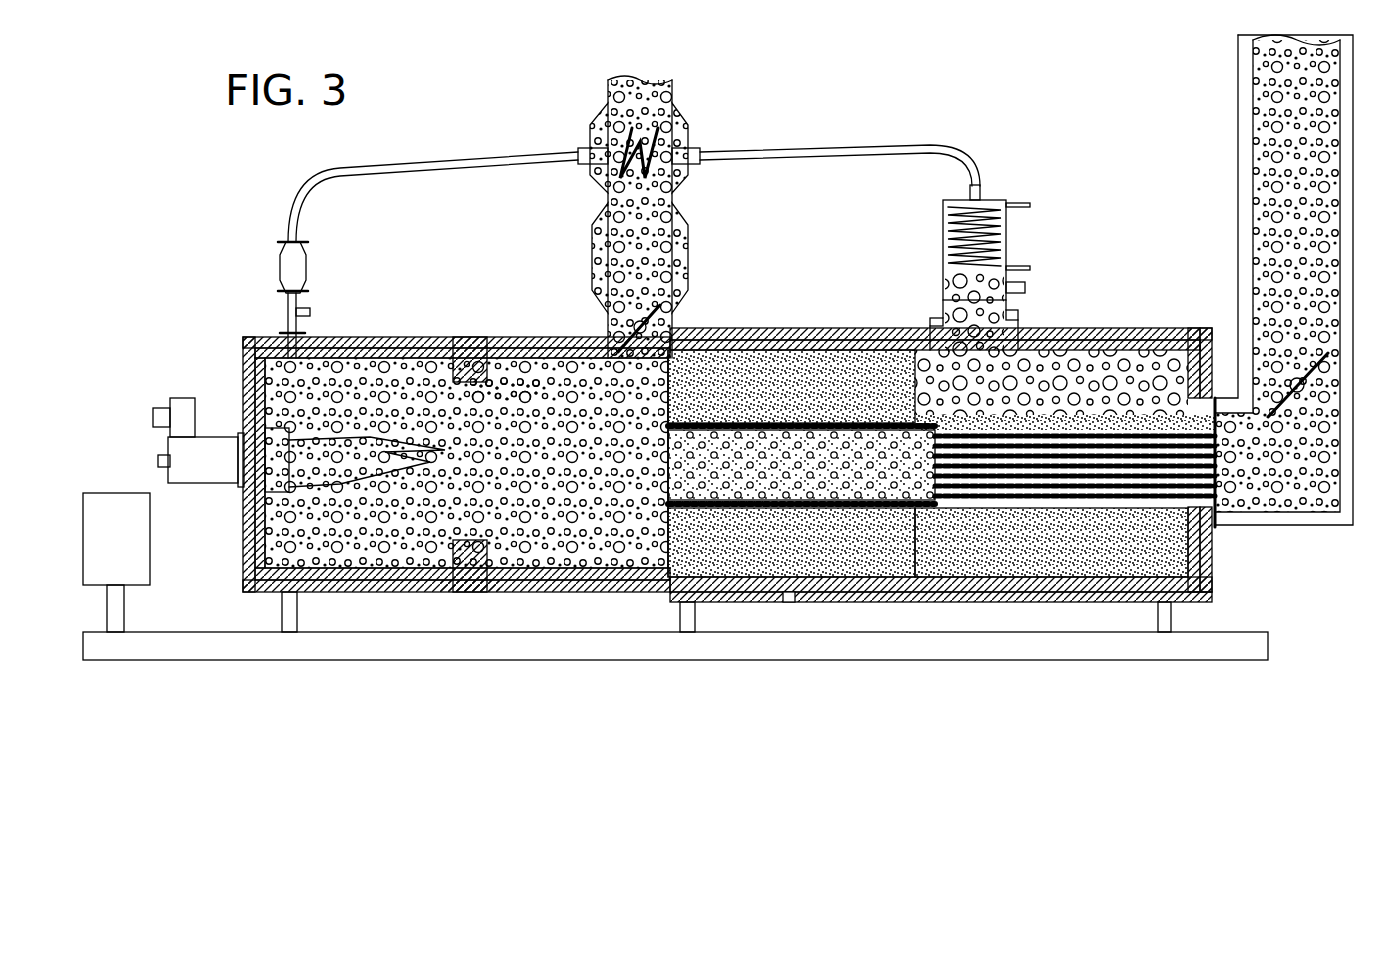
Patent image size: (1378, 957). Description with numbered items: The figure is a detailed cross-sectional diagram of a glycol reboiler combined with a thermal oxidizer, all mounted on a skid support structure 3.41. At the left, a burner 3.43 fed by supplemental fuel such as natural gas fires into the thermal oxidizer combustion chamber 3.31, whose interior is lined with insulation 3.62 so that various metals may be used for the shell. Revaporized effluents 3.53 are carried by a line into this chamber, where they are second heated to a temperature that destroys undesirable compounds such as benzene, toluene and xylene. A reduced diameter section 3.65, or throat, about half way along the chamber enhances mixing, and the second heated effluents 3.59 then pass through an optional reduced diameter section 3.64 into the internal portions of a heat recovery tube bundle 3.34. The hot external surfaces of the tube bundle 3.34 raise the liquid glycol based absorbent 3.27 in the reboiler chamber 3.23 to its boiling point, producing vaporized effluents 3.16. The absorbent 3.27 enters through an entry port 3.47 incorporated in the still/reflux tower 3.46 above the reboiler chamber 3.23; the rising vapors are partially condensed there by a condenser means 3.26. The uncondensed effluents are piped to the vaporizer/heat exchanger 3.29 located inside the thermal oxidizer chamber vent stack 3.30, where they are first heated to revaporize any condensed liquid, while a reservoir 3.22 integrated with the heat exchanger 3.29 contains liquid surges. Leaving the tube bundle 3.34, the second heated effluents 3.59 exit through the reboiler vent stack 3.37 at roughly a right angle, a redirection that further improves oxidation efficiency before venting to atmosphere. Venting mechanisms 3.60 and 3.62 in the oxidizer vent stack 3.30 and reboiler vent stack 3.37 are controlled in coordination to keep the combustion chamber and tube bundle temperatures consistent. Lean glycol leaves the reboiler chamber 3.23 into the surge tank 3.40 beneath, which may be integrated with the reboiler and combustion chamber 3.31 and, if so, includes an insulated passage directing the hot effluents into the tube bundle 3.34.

The skid support structure 3.41 is at (900, 645).
The burner 3.43 is at (222, 428).
The thermal oxidizer combustion chamber 3.31 is at (355, 365).
The second heated effluents 3.59 is at (530, 377).
The reduced diameter section 3.65 is at (458, 347).
The insulation 3.62 is at (477, 587).
The revaporized effluents 3.53 is at (500, 158).
The reservoir 3.22 is at (600, 130).
The vaporizer/heat exchanger 3.29 is at (640, 125).
The thermal oxidizer chamber vent stack 3.30 is at (673, 193).
The venting mechanism 3.60 is at (655, 327).
The reduced diameter section 3.64 is at (785, 417).
The surge tank 3.40 is at (765, 548).
The heat recovery tube bundle 3.34 is at (1060, 500).
The vaporized effluents 3.16 is at (993, 293).
The liquid glycol based absorbent 3.27 is at (1177, 550).
The reboiler chamber 3.23 is at (1160, 397).
The condenser means 3.26 is at (1015, 205).
The still/reflux tower 3.46 is at (943, 293).
The entry port 3.47 is at (1027, 288).
The reboiler vent stack 3.37 is at (1265, 128).